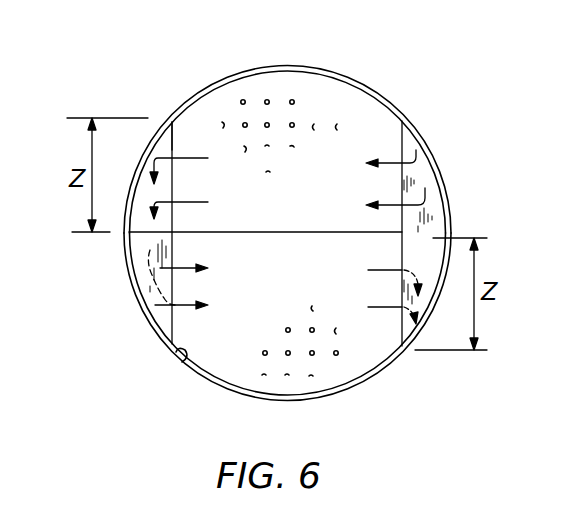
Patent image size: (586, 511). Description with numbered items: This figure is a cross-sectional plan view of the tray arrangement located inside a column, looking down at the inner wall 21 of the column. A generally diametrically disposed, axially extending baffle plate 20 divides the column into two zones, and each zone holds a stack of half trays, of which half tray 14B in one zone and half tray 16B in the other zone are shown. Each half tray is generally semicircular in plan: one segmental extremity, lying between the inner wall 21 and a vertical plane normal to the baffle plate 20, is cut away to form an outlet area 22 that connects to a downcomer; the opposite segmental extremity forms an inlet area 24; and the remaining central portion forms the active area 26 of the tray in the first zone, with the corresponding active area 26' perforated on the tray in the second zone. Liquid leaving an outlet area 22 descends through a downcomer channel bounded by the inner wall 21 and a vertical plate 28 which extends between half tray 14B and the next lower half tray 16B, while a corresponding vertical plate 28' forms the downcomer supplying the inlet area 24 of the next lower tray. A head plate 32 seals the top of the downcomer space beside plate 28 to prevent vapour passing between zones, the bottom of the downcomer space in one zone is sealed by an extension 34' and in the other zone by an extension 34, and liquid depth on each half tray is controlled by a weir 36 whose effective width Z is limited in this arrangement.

The half tray 14B is at (271, 80).
The half tray 16B is at (355, 370).
The baffle plate 20 is at (317, 232).
The inner wall 21 is at (188, 360).
The outlet area 22 is at (160, 135).
The inlet area 24 is at (432, 218).
The active area 26 is at (279, 153).
The active area 26' is at (300, 326).
The vertical plate 28 is at (201, 274).
The vertical plate 28' is at (419, 153).
The head plate 32 is at (147, 270).
The extension 34 is at (446, 289).
The extension 34' is at (116, 192).
The weir 36 is at (174, 122).